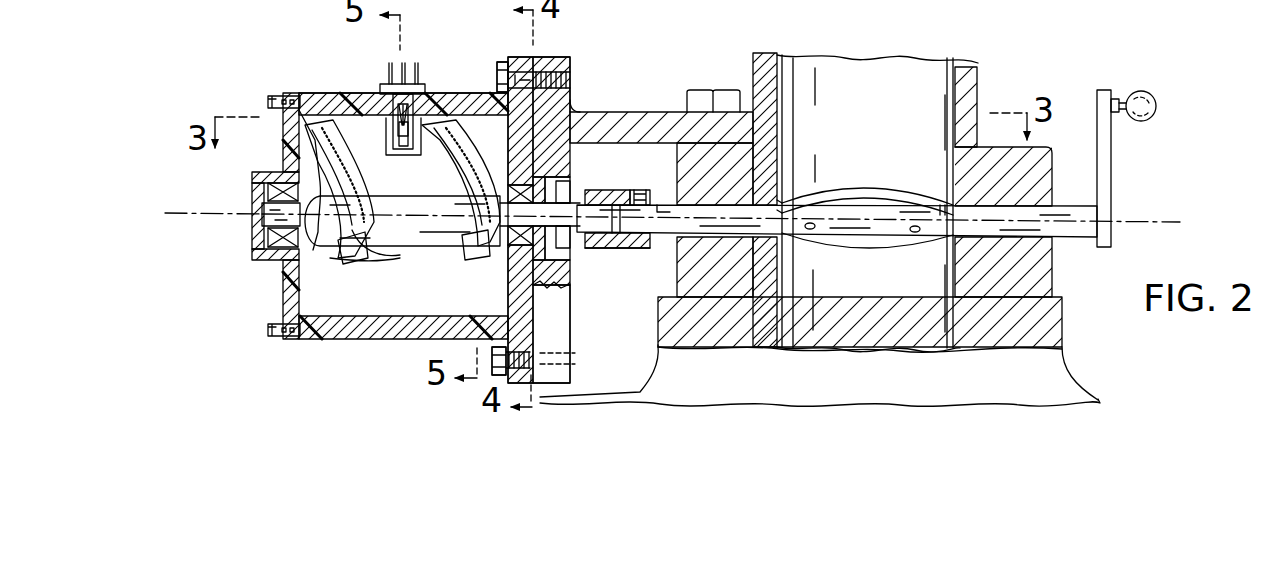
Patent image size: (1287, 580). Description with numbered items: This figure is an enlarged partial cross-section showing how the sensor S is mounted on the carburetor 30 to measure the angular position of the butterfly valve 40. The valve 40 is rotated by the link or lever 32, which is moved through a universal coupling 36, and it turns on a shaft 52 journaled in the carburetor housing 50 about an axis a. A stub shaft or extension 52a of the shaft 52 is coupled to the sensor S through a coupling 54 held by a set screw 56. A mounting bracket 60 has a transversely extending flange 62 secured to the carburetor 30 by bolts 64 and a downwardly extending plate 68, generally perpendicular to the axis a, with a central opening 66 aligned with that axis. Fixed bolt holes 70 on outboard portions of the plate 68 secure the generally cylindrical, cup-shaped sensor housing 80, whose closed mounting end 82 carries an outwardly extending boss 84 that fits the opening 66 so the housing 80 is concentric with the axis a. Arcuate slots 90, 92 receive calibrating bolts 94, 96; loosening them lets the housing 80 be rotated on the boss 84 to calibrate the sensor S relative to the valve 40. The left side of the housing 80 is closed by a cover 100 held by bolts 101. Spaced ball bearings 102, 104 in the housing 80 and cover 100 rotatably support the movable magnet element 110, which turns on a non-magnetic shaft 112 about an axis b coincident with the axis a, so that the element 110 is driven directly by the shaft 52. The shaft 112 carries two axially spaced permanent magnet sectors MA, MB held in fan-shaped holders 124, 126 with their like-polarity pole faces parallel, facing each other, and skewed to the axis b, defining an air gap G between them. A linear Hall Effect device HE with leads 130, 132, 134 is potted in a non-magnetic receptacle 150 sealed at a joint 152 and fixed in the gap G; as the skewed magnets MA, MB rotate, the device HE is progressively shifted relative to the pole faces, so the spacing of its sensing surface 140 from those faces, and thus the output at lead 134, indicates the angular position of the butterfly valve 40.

The carburetor 30 is at (1053, 268).
The link or lever 32 is at (1110, 175).
The universal coupling 36 is at (1122, 98).
The butterfly valve 40 is at (874, 192).
The carburetor housing 50 is at (1056, 160).
The shaft 52 is at (1015, 228).
The stub shaft or extension 52a is at (667, 210).
The coupling 54 is at (607, 197).
The set screw 56 is at (638, 192).
The mounting bracket 60 is at (653, 110).
The transversely extending flange 62 is at (776, 119).
The bolts 64 is at (718, 94).
The central opening 66 is at (565, 245).
The downwardly extending plate 68 is at (557, 315).
The fixed bolt holes 70 is at (573, 75).
The sensor housing 80 is at (309, 91).
The closed mounting end 82 is at (523, 143).
The boss 84 is at (557, 180).
The arcuate slot 90 is at (532, 75).
The arcuate slot 92 is at (523, 352).
The calibrating bolt 94 is at (573, 84).
The calibrating bolt 96 is at (497, 372).
The cover 100 is at (280, 278).
The bolts 101 is at (276, 98).
The ball bearing 102 is at (508, 247).
The ball bearing 104 is at (262, 233).
The movable magnet element 110 is at (405, 249).
The shaft 112 is at (612, 248).
The fan-shaped holder 124 is at (318, 170).
The fan-shaped holder 126 is at (450, 253).
The lead 130 is at (388, 80).
The lead 132 is at (404, 80).
The lead 134 is at (417, 80).
The sensing surface 140 is at (390, 142).
The non-magnetic receptacle 150 is at (416, 120).
The joint 152 is at (394, 105).
The permanent magnet sector MA is at (362, 170).
The permanent magnet sector MB is at (483, 162).
The linear Hall Effect device HE is at (402, 226).
The air gap G is at (393, 240).
The sensor S is at (463, 94).
The axis a is at (1176, 222).
The axis b is at (182, 213).